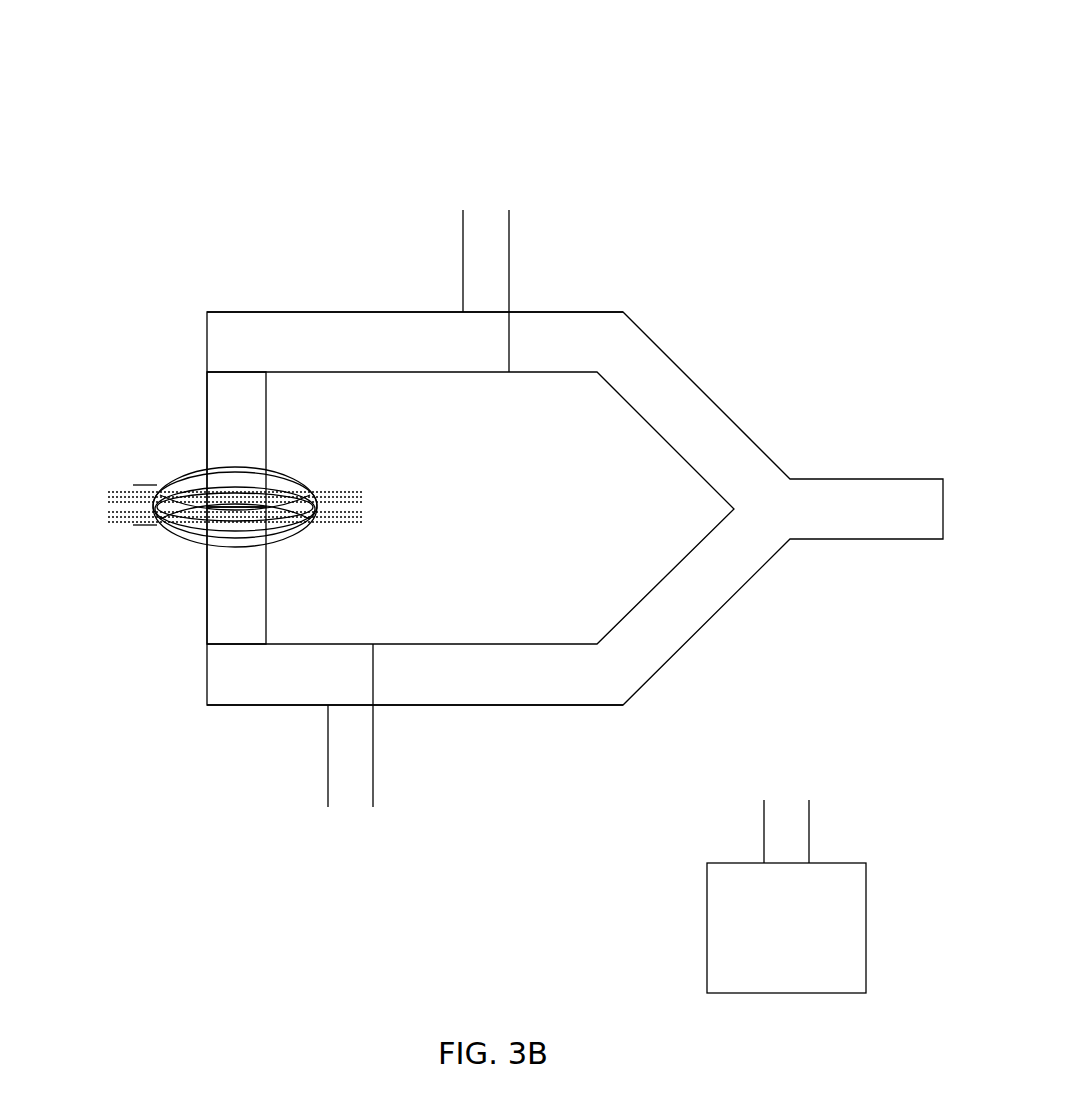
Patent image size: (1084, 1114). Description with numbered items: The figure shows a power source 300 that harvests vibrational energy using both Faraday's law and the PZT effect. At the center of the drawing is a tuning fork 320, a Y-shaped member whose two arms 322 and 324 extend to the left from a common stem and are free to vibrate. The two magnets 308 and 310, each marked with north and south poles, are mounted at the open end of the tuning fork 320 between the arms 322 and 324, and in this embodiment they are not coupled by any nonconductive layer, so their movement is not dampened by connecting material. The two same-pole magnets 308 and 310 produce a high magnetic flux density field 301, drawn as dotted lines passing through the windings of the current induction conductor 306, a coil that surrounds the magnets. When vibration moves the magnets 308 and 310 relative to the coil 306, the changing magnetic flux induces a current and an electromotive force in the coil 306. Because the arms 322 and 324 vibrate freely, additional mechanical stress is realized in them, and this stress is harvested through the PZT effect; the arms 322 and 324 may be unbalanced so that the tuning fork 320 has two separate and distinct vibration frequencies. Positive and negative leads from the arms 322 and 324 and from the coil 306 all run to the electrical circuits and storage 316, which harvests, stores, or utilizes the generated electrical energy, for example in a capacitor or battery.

The power source 300 is at (288, 208).
The high magnetic flux density field 301 is at (355, 523).
The current induction conductor 306 is at (302, 475).
The magnet 308 is at (236, 439).
The magnet 310 is at (236, 575).
The circuitry 316 is at (325, 873).
The tuning fork 320 is at (682, 370).
The arm 322 is at (228, 310).
The arm 324 is at (463, 706).